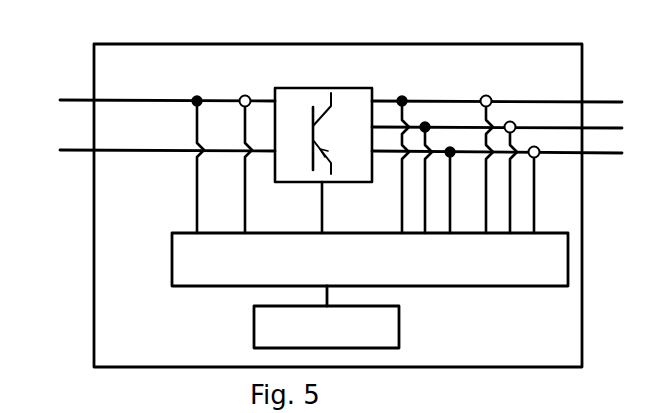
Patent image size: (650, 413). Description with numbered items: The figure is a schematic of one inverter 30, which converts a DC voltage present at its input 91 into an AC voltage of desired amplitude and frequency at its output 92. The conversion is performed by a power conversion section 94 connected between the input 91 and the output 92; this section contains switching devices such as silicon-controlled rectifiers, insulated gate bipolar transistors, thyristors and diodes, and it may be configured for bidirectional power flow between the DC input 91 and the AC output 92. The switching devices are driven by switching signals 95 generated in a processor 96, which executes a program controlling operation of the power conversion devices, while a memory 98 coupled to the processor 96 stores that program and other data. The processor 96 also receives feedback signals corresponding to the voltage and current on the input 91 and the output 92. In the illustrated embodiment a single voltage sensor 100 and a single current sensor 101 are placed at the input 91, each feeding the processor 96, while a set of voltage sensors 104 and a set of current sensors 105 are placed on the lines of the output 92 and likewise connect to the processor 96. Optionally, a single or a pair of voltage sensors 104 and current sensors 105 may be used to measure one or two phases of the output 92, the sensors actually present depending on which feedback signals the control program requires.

The inverter 30 is at (93, 333).
The input 91 is at (86, 94).
The output 92 is at (602, 92).
The power conversion section 94 is at (311, 88).
The switching signals 95 is at (320, 203).
The processor 96 is at (171, 272).
The memory 98 is at (254, 343).
The voltage sensor 100 is at (195, 96).
The current sensor 101 is at (244, 94).
The voltage sensors 104 is at (449, 147).
The current sensors 105 is at (533, 146).